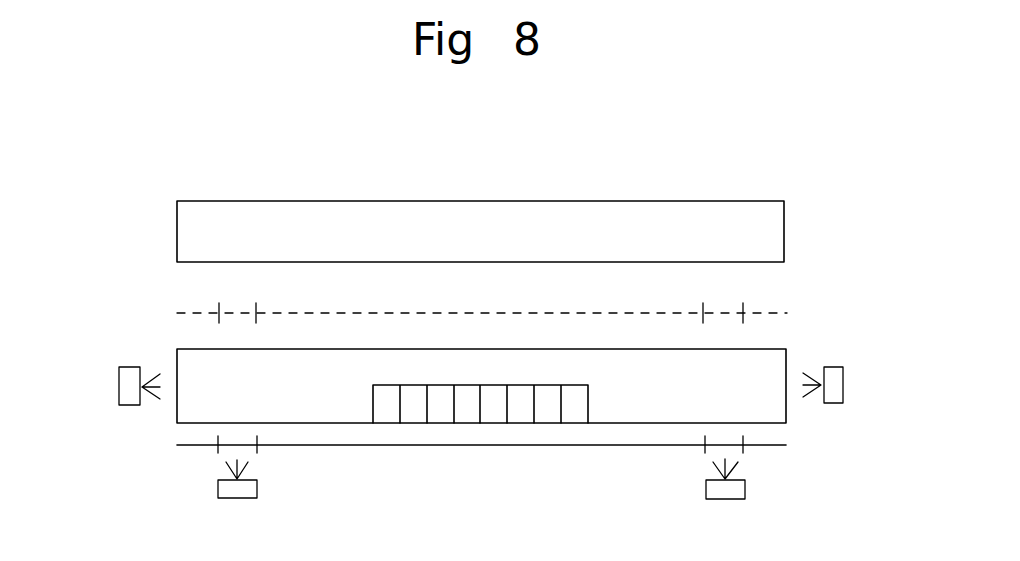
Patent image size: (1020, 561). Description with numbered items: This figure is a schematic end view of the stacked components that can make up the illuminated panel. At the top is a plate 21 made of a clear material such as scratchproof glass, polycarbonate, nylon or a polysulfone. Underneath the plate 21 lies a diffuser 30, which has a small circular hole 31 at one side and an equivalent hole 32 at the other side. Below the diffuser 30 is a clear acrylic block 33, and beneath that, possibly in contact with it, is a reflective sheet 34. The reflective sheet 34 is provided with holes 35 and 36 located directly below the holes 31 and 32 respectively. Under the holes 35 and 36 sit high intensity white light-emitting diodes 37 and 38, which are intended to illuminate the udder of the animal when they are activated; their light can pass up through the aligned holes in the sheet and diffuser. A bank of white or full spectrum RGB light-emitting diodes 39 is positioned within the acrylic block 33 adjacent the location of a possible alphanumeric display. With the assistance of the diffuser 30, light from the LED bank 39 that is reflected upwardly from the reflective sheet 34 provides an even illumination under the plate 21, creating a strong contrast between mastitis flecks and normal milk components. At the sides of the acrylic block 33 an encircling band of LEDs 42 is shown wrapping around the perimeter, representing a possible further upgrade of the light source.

The plate 21 is at (477, 230).
The diffuser 30 is at (767, 312).
The small circular hole 31 is at (723, 302).
The hole 32 is at (240, 300).
The clear acrylic block 33 is at (733, 398).
The reflective sheet 34 is at (553, 446).
The hole 35 is at (723, 440).
The hole 36 is at (238, 434).
The high intensity white light-emitting diode 37 is at (728, 492).
The high intensity white light-emitting diode 38 is at (240, 490).
The bank of light-emitting diodes 39 is at (441, 404).
The encircling band of LEDs 42 is at (120, 382).